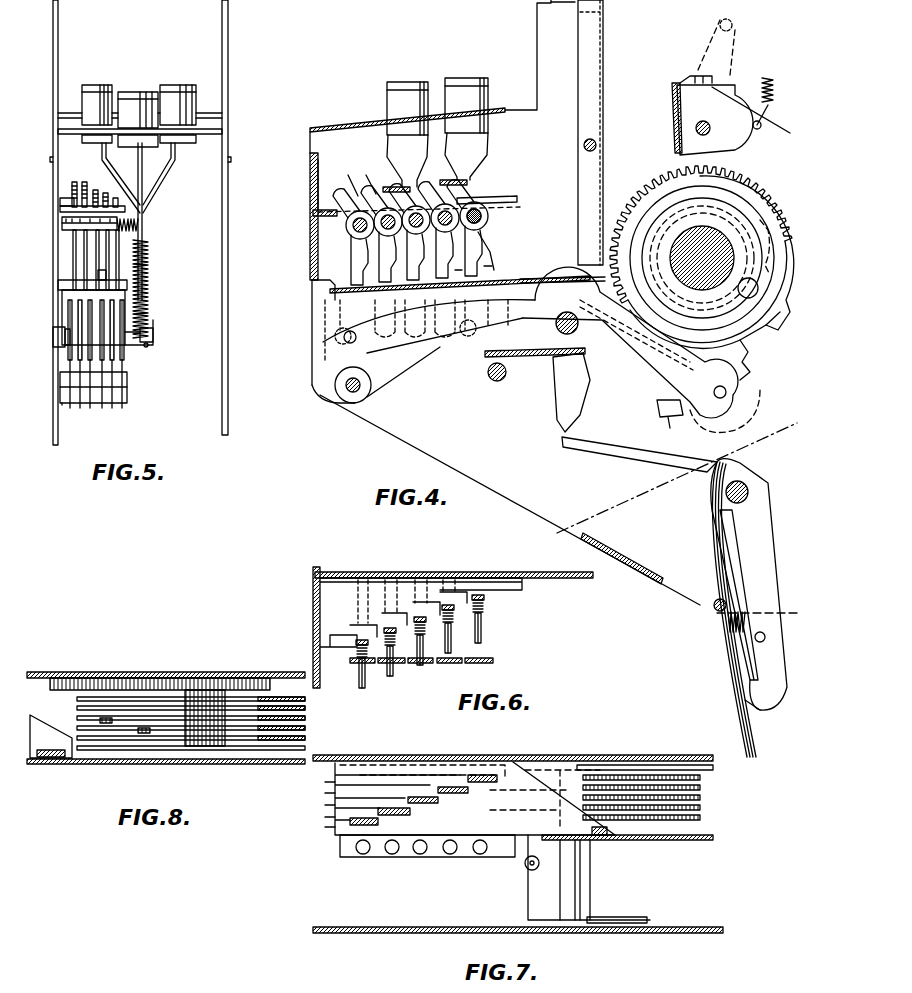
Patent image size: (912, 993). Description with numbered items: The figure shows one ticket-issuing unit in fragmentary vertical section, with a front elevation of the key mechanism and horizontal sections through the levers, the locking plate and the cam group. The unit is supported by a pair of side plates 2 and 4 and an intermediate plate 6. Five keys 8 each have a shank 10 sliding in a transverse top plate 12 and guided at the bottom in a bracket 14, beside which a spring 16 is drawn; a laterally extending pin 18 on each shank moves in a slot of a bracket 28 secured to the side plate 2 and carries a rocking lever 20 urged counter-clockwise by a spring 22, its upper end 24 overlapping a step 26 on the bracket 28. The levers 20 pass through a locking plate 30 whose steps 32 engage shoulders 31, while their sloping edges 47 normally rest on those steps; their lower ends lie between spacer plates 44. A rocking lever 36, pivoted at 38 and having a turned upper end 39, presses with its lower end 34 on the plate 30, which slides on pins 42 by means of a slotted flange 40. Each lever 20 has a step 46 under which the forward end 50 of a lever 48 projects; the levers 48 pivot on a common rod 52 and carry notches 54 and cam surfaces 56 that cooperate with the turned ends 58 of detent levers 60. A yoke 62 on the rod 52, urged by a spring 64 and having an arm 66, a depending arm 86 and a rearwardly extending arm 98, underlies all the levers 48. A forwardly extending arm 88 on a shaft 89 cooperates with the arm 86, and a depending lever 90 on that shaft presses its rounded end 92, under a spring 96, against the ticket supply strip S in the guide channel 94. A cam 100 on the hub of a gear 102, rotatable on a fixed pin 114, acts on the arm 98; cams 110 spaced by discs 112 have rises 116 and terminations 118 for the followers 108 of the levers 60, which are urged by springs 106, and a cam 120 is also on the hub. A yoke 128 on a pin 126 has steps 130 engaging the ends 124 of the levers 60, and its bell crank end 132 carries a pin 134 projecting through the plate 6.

In FIG. 4, the side plate 2 is at (548, 515).
In FIG. 6, the side plate 2 is at (405, 572).
In FIG. 8, the side plate 2 is at (45, 672).
In FIG. 7, the side plate 2 is at (393, 755).
In FIG. 7, the side plate 4 is at (390, 933).
In FIG. 4, the intermediate plate 6 is at (540, 202).
In FIG. 8, the intermediate plate 6 is at (245, 764).
In FIG. 7, the intermediate plate 6 is at (668, 840).
In FIG. 5, the keys 8 is at (138, 94).
In FIG. 4, the keys 8 is at (460, 78).
In FIG. 5, the shank 10 is at (143, 190).
In FIG. 6, the shank 10 is at (478, 663).
In FIG. 7, the shank 10 is at (478, 856).
In FIG. 5, the transverse top plate 12 is at (210, 114).
In FIG. 4, the transverse top plate 12 is at (350, 124).
In FIG. 5, the bracket 14 is at (153, 334).
In FIG. 5, the spring 16 is at (150, 272).
In FIG. 7, the spring 16 is at (362, 856).
In FIG. 5, the pin 18 is at (66, 232).
In FIG. 4, the pin 18 is at (476, 210).
In FIG. 5, the rocking lever 20 is at (108, 262).
In FIG. 4, the rocking lever 20 is at (385, 245).
In FIG. 6, the rocking lever 20 is at (470, 590).
In FIG. 7, the rocking lever 20 is at (450, 790).
In FIG. 5, the spring 22 is at (135, 223).
In FIG. 6, the spring 22 is at (455, 625).
In FIG. 5, the upper end 24 is at (94, 192).
In FIG. 4, the upper end 24 is at (357, 175).
In FIG. 4, the step 26 is at (325, 210).
In FIG. 6, the step 26 is at (345, 640).
In FIG. 5, the bracket 28 is at (62, 207).
In FIG. 4, the bracket 28 is at (512, 196).
In FIG. 6, the bracket 28 is at (340, 580).
In FIG. 5, the locking plate 30 is at (60, 283).
In FIG. 4, the locking plate 30 is at (525, 283).
In FIG. 8, the locking plate 30 is at (37, 730).
In FIG. 7, the locking plate 30 is at (533, 783).
In FIG. 4, the shoulders 31 is at (488, 238).
In FIG. 7, the steps 32 is at (500, 775).
In FIG. 4, the lower end 34 is at (580, 280).
In FIG. 8, the lower end 34 is at (45, 764).
In FIG. 7, the lower end 34 is at (598, 835).
In FIG. 4, the rocking lever 36 is at (578, 80).
In FIG. 4, the pivot 38 is at (584, 144).
In FIG. 4, the turned upper end 39 is at (592, 6).
In FIG. 5, the flange 40 is at (62, 318).
In FIG. 4, the flange 40 is at (338, 360).
In FIG. 5, the pins 42 is at (53, 335).
In FIG. 4, the pins 42 is at (336, 338).
In FIG. 5, the spacer plates 44 is at (112, 372).
In FIG. 7, the spacer plates 44 is at (375, 795).
In FIG. 4, the step 46 is at (368, 318).
In FIG. 4, the sloping edges 47 is at (488, 262).
In FIG. 4, the lever 48 is at (520, 340).
In FIG. 7, the lever 48 is at (700, 798).
In FIG. 4, the forward end 50 is at (415, 343).
In FIG. 4, the common rod 52 is at (560, 315).
In FIG. 7, the common rod 52 is at (578, 887).
In FIG. 4, the notches 54 is at (657, 405).
In FIG. 4, the sloping cam surfaces 56 is at (668, 420).
In FIG. 4, the turned ends 58 is at (700, 418).
In FIG. 4, the detent levers 60 is at (770, 435).
In FIG. 8, the detent levers 60 is at (300, 705).
In FIG. 4, the yoke 62 is at (535, 366).
In FIG. 7, the yoke 62 is at (528, 890).
In FIG. 7, the spring 64 is at (525, 866).
In FIG. 7, the arm 66 is at (645, 918).
In FIG. 4, the depending arm 86 is at (560, 400).
In FIG. 4, the forwardly extending arm 88 is at (575, 445).
In FIG. 4, the shaft 89 is at (748, 492).
In FIG. 4, the depending lever 90 is at (770, 570).
In FIG. 4, the rounded end 92 is at (750, 708).
In FIG. 4, the guide channel 94 is at (718, 652).
In FIG. 4, the spring 96 is at (750, 615).
In FIG. 4, the rearwardly extending arm 98 is at (732, 344).
In FIG. 7, the rearwardly extending arm 98 is at (713, 768).
In FIG. 4, the cam 100 is at (712, 262).
In FIG. 8, the cam 100 is at (195, 725).
In FIG. 4, the gear 102 is at (632, 185).
In FIG. 8, the gear 102 is at (90, 684).
In FIG. 4, the springs 106 is at (751, 97).
In FIG. 4, the cam follower portion 108 is at (745, 312).
In FIG. 4, the cam 110 is at (781, 310).
In FIG. 4, the discs 112 is at (668, 190).
In FIG. 8, the discs 112 is at (132, 706).
In FIG. 4, the fixed transverse pin 114 is at (714, 235).
In FIG. 8, the fixed transverse pin 114 is at (160, 672).
In FIG. 4, the rises 116 is at (735, 235).
In FIG. 4, the cam terminations 118 is at (725, 200).
In FIG. 8, the cam terminations 118 is at (142, 735).
In FIG. 8, the cam 120 is at (192, 752).
In FIG. 4, the ends 124 is at (690, 97).
In FIG. 4, the transverse pin 126 is at (710, 132).
In FIG. 4, the yoke 128 is at (674, 118).
In FIG. 4, the steps 130 is at (704, 75).
In FIG. 4, the bell crank end 132 is at (710, 30).
In FIG. 4, the pin 134 is at (732, 23).
In FIG. 4, the ticket supply strip S is at (750, 752).